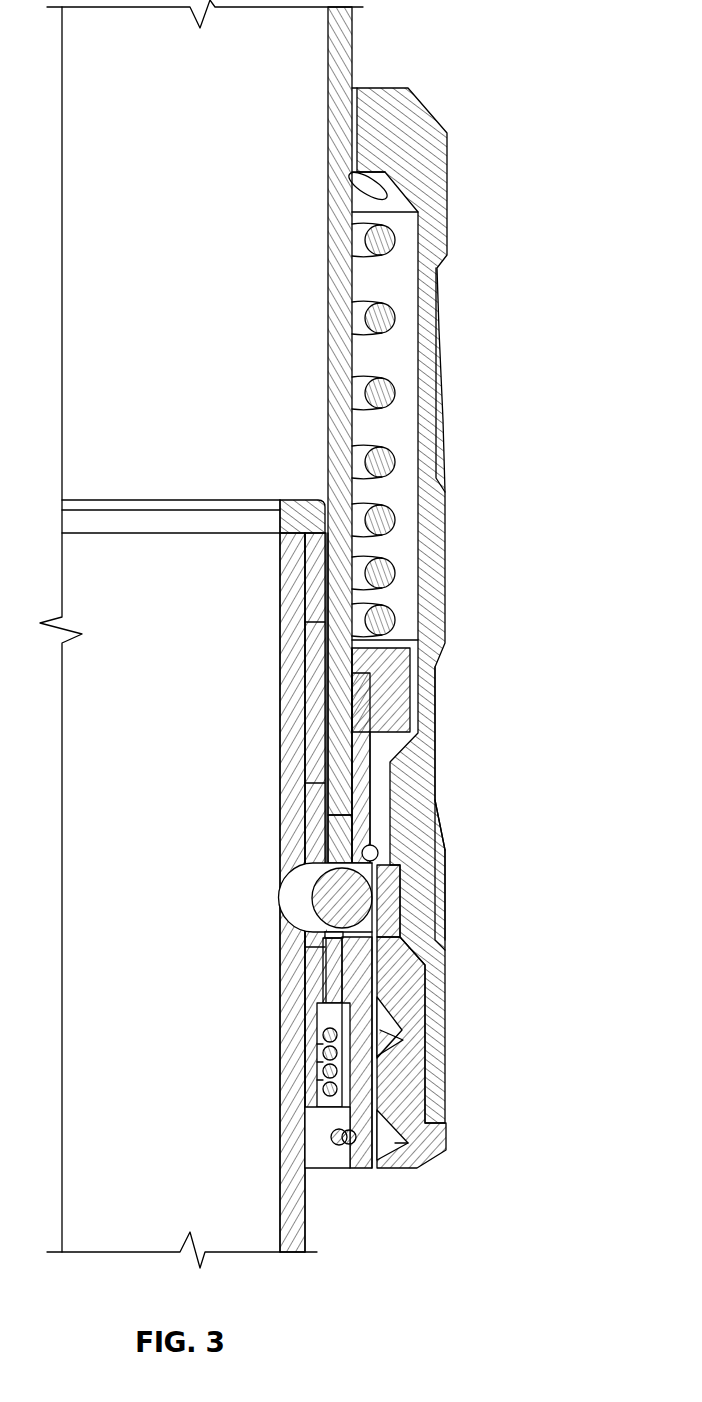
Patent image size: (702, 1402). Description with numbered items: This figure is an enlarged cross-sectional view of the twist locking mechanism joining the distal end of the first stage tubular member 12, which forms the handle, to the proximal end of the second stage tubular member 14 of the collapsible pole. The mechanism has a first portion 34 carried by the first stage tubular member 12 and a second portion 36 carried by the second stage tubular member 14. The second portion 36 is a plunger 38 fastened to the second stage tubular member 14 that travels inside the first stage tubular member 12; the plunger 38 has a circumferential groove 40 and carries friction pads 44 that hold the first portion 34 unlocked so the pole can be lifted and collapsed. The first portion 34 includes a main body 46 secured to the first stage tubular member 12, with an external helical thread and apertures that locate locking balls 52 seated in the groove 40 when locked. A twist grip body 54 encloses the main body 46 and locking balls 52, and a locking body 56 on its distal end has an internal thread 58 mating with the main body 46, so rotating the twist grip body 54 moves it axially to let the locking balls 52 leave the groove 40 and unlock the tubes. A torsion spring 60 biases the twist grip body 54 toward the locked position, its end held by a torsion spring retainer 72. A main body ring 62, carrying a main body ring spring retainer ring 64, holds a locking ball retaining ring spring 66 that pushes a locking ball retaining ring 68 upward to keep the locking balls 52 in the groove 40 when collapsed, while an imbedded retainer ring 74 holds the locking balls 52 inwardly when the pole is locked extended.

The first stage tubular member 12 is at (352, 40).
The second stage tubular member 14 is at (303, 1225).
The first portion 34 is at (442, 722).
The second portion 36 is at (308, 1184).
The plunger 38 is at (312, 498).
The circumferential groove 40 is at (308, 893).
The friction pads 44 is at (310, 677).
The main body 46 is at (385, 958).
The locking balls 52 is at (362, 908).
The twist grip body 54 is at (447, 170).
The locking body 56 is at (405, 1088).
The internal thread 58 is at (403, 1040).
The torsion spring 60 is at (382, 318).
The main body ring 62 is at (340, 1170).
The main body ring spring retainer ring 64 is at (372, 852).
The locking ball retaining ring spring 66 is at (330, 1062).
The locking ball retaining ring 68 is at (342, 1015).
The torsion spring retainer 72 is at (420, 692).
The imbedded retainer ring 74 is at (440, 878).